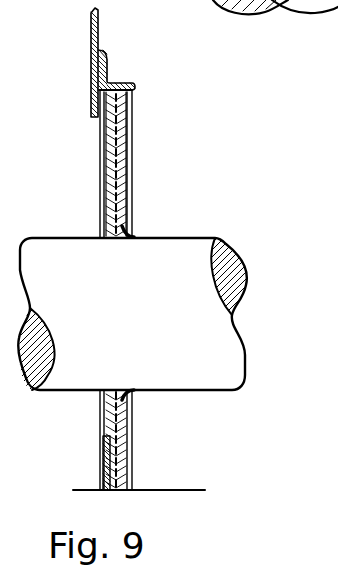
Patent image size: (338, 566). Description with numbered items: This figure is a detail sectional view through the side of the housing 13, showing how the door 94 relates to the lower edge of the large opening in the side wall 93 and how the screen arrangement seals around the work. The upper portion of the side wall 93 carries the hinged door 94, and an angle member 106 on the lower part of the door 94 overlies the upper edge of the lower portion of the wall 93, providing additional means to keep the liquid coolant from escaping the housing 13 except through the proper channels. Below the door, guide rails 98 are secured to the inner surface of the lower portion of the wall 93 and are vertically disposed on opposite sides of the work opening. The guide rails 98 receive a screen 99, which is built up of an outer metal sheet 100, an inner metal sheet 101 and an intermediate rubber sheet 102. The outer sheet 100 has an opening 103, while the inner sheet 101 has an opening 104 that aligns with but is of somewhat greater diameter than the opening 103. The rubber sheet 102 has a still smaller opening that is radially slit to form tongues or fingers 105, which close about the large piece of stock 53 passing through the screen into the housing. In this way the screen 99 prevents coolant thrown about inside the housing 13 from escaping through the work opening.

The housing 13 is at (88, 78).
The piece of stock 53 is at (233, 350).
The side wall 93 is at (103, 462).
The door 94 is at (100, 32).
The guide rails 98 is at (127, 123).
The screen 99 is at (103, 148).
The outer metal sheet 100 is at (110, 168).
The inner metal sheet 101 is at (127, 176).
The intermediate rubber sheet 102 is at (130, 200).
The opening 103 is at (100, 238).
The opening 104 is at (136, 230).
The tongues or fingers 105 is at (140, 240).
The angle member 106 is at (123, 80).